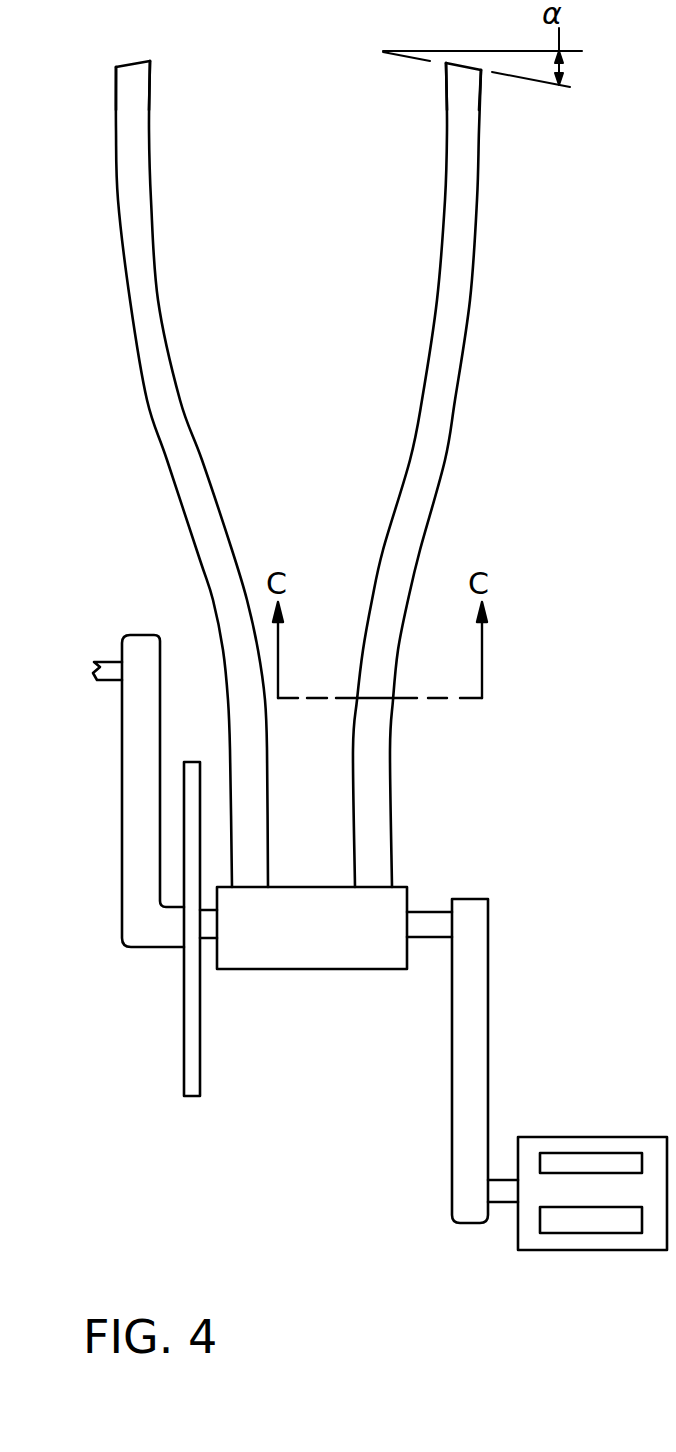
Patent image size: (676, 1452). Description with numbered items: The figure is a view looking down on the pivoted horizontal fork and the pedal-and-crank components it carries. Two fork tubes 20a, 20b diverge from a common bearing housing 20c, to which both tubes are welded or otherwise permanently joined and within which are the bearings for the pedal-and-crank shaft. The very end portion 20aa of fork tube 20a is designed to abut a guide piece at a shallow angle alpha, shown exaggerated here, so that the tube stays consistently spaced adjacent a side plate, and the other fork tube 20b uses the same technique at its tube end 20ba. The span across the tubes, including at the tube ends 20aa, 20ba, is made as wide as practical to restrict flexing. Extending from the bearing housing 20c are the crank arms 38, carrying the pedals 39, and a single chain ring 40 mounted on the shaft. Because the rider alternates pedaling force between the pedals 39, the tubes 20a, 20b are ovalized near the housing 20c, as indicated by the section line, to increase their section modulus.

The fork tube 20a is at (470, 328).
The end portion of fork tube 20aa is at (462, 72).
The fork tube 20b is at (187, 402).
The tube end 20ba is at (143, 66).
The bearing housing 20c is at (290, 969).
The crank arms 38 is at (122, 768).
The pedals 39 is at (618, 1137).
The chain ring 40 is at (184, 1072).